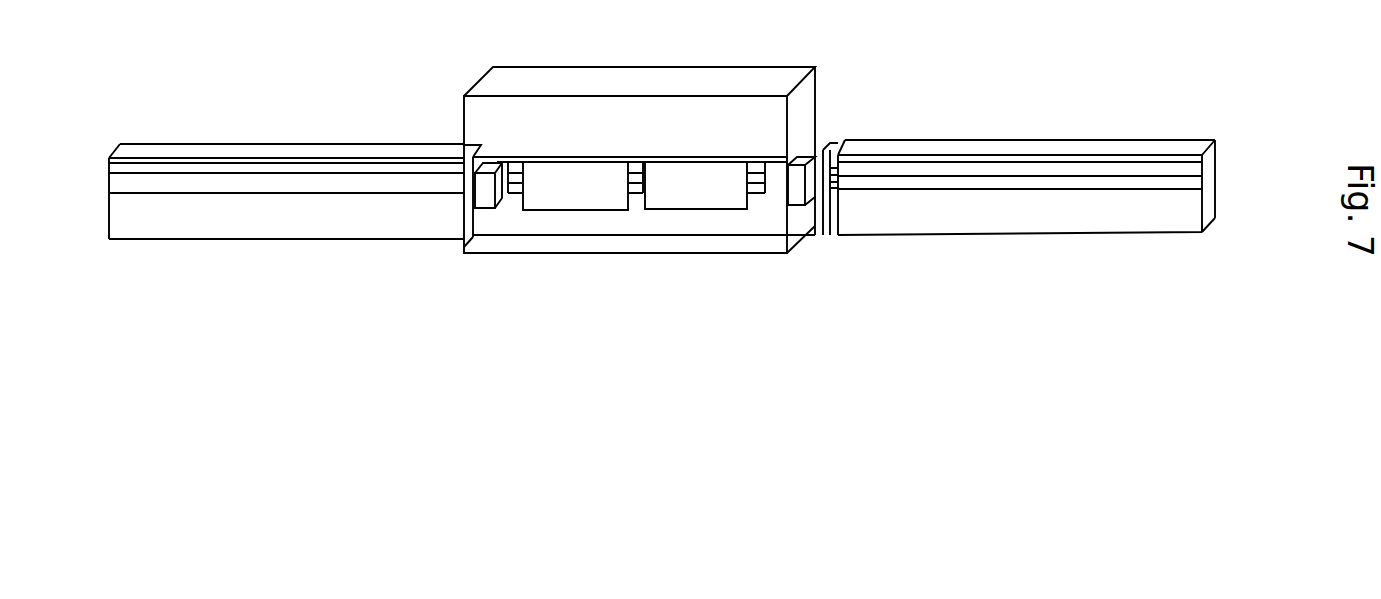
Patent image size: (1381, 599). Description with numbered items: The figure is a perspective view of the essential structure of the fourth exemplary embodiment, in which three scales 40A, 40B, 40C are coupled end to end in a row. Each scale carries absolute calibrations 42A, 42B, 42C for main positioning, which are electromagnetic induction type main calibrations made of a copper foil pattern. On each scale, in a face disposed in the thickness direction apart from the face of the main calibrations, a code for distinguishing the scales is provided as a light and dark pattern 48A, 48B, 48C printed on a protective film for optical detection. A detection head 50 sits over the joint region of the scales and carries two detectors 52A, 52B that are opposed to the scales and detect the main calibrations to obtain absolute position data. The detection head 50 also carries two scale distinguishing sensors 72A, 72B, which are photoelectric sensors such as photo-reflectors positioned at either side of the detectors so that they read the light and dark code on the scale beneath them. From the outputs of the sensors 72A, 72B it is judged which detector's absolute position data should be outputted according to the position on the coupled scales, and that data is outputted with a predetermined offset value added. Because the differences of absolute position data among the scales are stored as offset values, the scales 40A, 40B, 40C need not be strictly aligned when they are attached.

The scale 40A is at (138, 230).
The scale 40B is at (505, 227).
The scale 40C is at (1007, 223).
The absolute calibrations 42A is at (115, 187).
The absolute calibrations 42B is at (822, 193).
The absolute calibrations 42C is at (992, 168).
The light and dark pattern 48A is at (147, 172).
The light and dark pattern 48B is at (768, 178).
The light and dark pattern 48C is at (1133, 180).
The detection head 50 is at (615, 68).
The detector 52A is at (577, 172).
The detector 52B is at (686, 175).
The photoelectric sensor 72A is at (493, 163).
The photoelectric sensor 72B is at (802, 167).